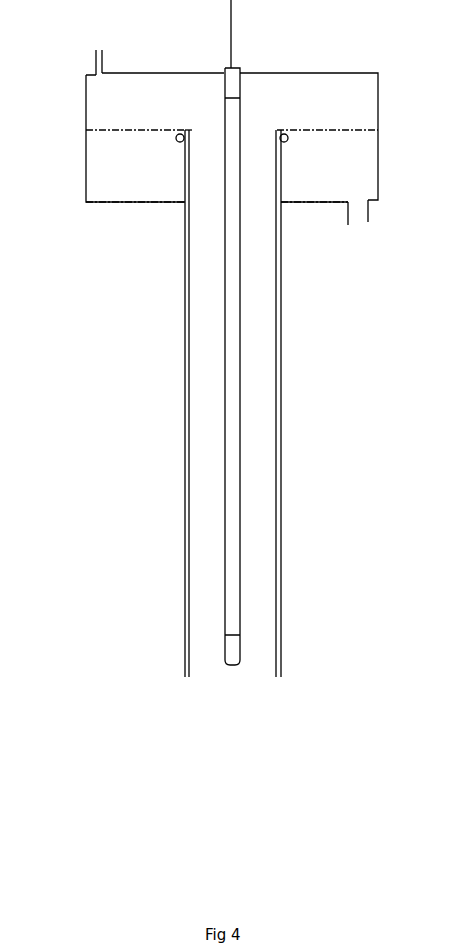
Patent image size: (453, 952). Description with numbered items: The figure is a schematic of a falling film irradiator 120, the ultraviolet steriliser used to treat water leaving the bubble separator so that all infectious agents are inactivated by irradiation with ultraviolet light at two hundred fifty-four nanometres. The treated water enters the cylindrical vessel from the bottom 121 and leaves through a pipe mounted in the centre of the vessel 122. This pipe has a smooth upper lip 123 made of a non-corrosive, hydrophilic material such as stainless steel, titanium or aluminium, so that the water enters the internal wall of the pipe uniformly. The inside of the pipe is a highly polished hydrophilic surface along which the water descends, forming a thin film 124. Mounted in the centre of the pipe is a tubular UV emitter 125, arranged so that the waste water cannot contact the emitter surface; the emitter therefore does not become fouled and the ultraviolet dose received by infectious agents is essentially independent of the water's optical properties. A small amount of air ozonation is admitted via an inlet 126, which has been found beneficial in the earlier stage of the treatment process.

The falling film irradiator 120 is at (86, 178).
The bottom 121 is at (356, 225).
The pipe mounted in the centre of the vessel 122 is at (282, 642).
The smooth upper lip 123 is at (177, 140).
The thin film 124 is at (192, 133).
The tubular UV emitter 125 is at (242, 135).
The inlet 126 is at (95, 48).